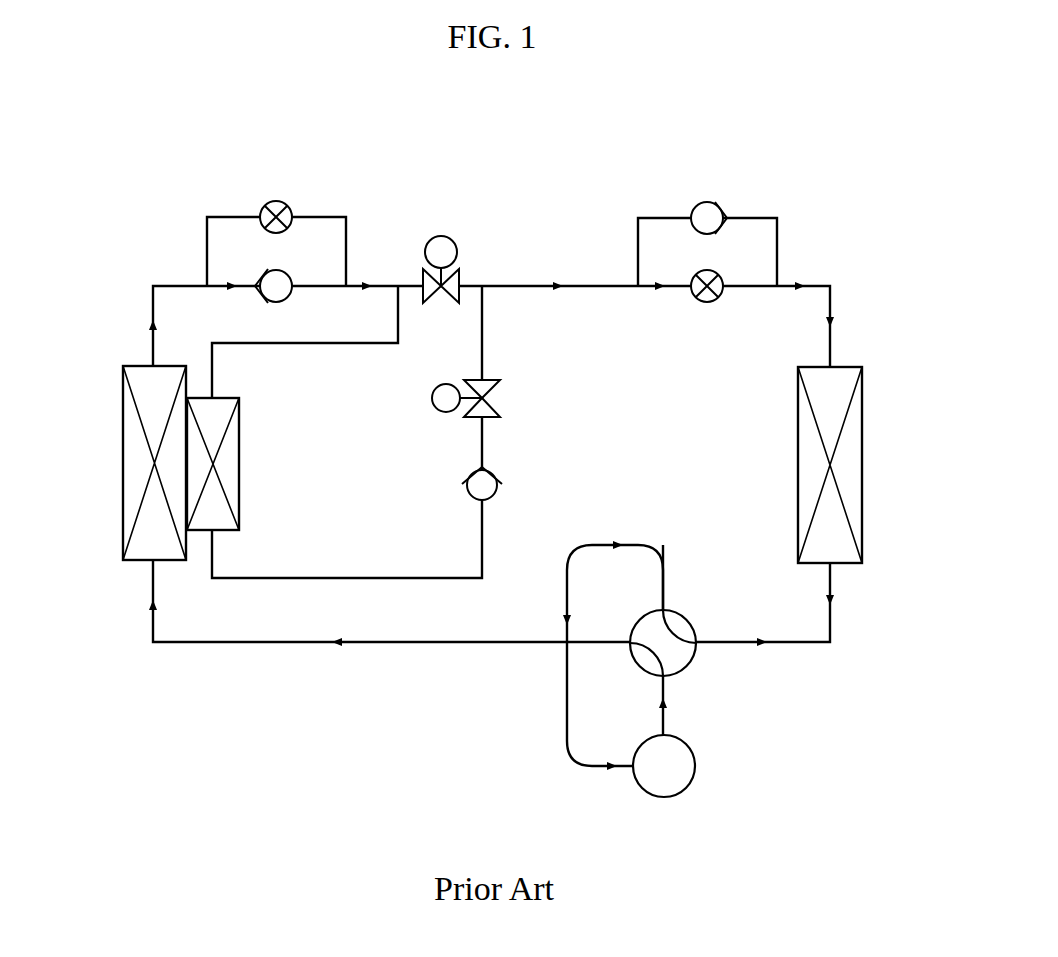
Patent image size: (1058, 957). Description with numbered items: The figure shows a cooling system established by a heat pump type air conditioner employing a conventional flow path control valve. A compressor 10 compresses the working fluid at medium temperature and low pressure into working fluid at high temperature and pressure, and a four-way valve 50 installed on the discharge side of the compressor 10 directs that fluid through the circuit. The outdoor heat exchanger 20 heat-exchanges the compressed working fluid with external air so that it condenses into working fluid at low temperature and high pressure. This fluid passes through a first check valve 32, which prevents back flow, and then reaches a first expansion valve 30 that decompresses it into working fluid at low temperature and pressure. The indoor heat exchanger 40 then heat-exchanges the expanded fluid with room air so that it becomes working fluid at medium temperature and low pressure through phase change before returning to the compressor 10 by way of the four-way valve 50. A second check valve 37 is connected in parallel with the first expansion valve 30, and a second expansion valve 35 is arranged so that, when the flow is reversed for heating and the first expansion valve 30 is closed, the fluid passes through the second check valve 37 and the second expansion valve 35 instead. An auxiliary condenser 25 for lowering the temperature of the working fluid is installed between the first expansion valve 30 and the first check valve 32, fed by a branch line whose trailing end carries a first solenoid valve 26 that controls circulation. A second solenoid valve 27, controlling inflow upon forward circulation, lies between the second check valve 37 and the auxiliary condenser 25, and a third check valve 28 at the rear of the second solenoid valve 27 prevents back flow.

The compressor 10 is at (695, 765).
The outdoor heat exchanger 20 is at (123, 478).
The auxiliary condenser 25 is at (239, 471).
The first solenoid valve 26 is at (441, 235).
The second solenoid valve 27 is at (432, 398).
The third check valve 28 is at (500, 486).
The first expansion valve 30 is at (718, 274).
The first check valve 32 is at (288, 275).
The second expansion valve 35 is at (276, 201).
The second check valve 37 is at (699, 202).
The indoor heat exchanger 40 is at (862, 451).
The 4-way valve 50 is at (690, 665).